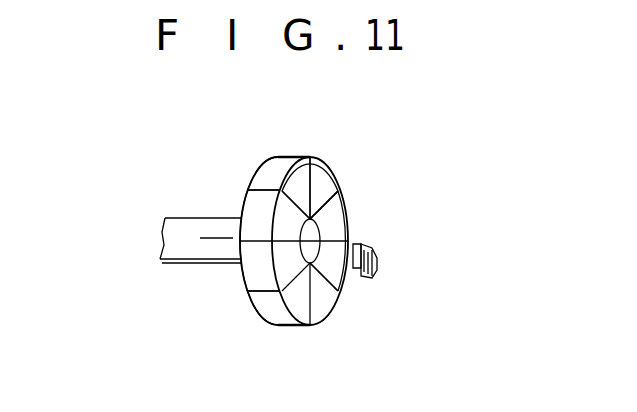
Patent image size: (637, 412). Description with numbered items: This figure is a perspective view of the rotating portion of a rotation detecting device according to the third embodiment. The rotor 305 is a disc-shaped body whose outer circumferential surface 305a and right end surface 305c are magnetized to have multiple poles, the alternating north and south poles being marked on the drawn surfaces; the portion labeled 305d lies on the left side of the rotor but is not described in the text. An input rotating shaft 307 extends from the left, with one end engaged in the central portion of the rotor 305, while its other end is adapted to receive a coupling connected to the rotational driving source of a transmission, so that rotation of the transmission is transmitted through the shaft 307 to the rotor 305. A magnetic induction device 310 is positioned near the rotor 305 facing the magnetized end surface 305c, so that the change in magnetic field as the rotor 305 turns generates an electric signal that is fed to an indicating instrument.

The rotor 305 is at (338, 320).
The outer circumferential surface 305a is at (281, 156).
The right end surface 305c is at (342, 204).
The magnet segment 305d is at (246, 184).
The input rotating shaft 307 is at (201, 250).
The magnetic induction device 310 is at (378, 266).